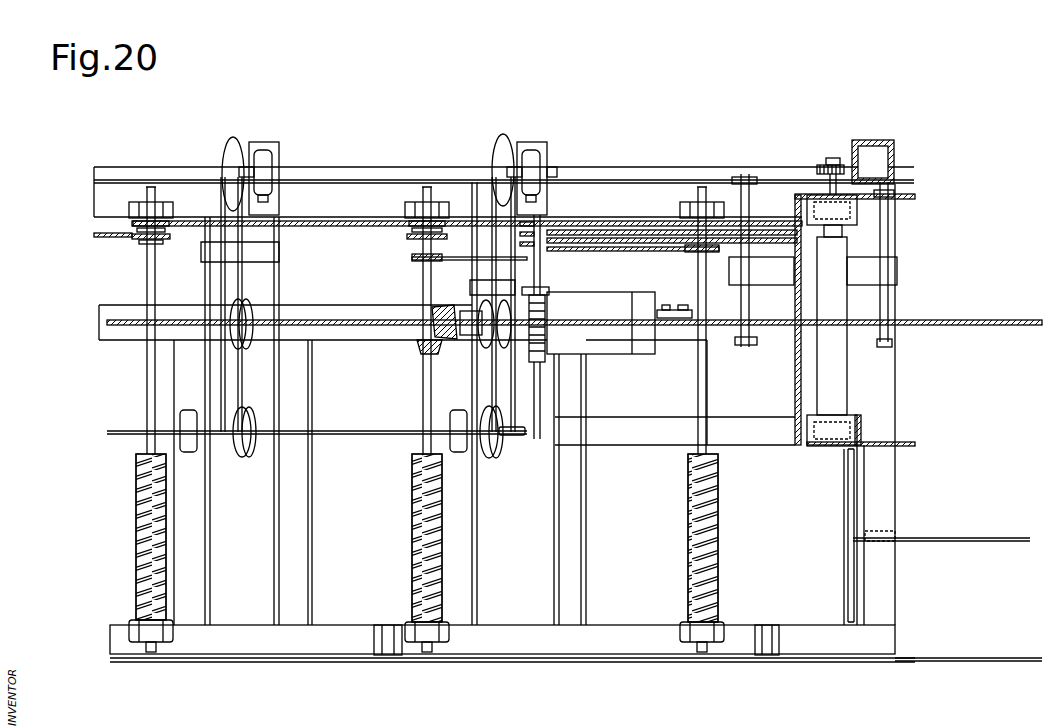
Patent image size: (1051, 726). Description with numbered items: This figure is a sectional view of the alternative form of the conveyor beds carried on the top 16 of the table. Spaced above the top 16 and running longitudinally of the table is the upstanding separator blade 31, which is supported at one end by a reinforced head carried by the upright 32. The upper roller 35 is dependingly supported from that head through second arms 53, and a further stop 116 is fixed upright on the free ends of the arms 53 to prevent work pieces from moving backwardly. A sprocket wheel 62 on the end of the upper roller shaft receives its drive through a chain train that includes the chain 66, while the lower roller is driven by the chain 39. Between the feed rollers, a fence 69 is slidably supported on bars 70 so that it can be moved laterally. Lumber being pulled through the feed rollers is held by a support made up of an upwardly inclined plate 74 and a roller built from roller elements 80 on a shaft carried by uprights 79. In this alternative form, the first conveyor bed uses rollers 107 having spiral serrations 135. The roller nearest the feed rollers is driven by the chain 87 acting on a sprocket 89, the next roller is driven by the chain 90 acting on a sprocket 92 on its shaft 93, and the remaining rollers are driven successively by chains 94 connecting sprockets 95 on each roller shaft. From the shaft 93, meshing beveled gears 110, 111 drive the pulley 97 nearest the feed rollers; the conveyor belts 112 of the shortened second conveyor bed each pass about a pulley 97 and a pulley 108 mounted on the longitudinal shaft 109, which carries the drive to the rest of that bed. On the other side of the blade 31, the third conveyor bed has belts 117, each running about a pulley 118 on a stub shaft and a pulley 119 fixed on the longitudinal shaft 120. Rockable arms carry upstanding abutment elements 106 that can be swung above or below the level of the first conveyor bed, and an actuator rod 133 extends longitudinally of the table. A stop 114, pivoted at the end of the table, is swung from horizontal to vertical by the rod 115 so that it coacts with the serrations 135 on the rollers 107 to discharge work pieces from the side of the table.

The top 16 is at (580, 185).
The shaft 120 is at (400, 167).
The chains 94 is at (92, 233).
The chain 39 is at (612, 228).
The chain 66 is at (638, 237).
The chain 87 is at (635, 250).
The chain 90 is at (447, 255).
The separator blade 31 is at (955, 318).
The second arm 53 is at (905, 192).
The actuator rod 133 is at (935, 656).
The rod 115 is at (945, 537).
The sprockets 95 is at (150, 241).
The rollers 107 is at (135, 476).
The spiral serrations 135 is at (135, 506).
The shaft 93 is at (418, 385).
The sprocket 92 is at (412, 257).
The beveled gear 110 is at (415, 346).
The beveled gear 111 is at (430, 311).
The sprocket 89 is at (700, 260).
The belts 117 is at (232, 140).
The pulley 119 is at (250, 150).
The conveyor belts 112 is at (240, 366).
The pulley 97 is at (248, 300).
The pulley 118 is at (224, 337).
The pulley 108 is at (248, 456).
The shaft 109 is at (360, 433).
The upwardly inclined plate 74 is at (585, 293).
The roller elements 80 is at (545, 336).
The uprights 79 is at (545, 290).
The bars 70 is at (887, 305).
The fence 69 is at (886, 272).
The upper roller 35 is at (845, 243).
The sprocket wheel 62 is at (825, 160).
The upright 32 is at (890, 140).
The stop 116 is at (793, 232).
The stop 114 is at (847, 576).
The abutment element 106 is at (383, 623).